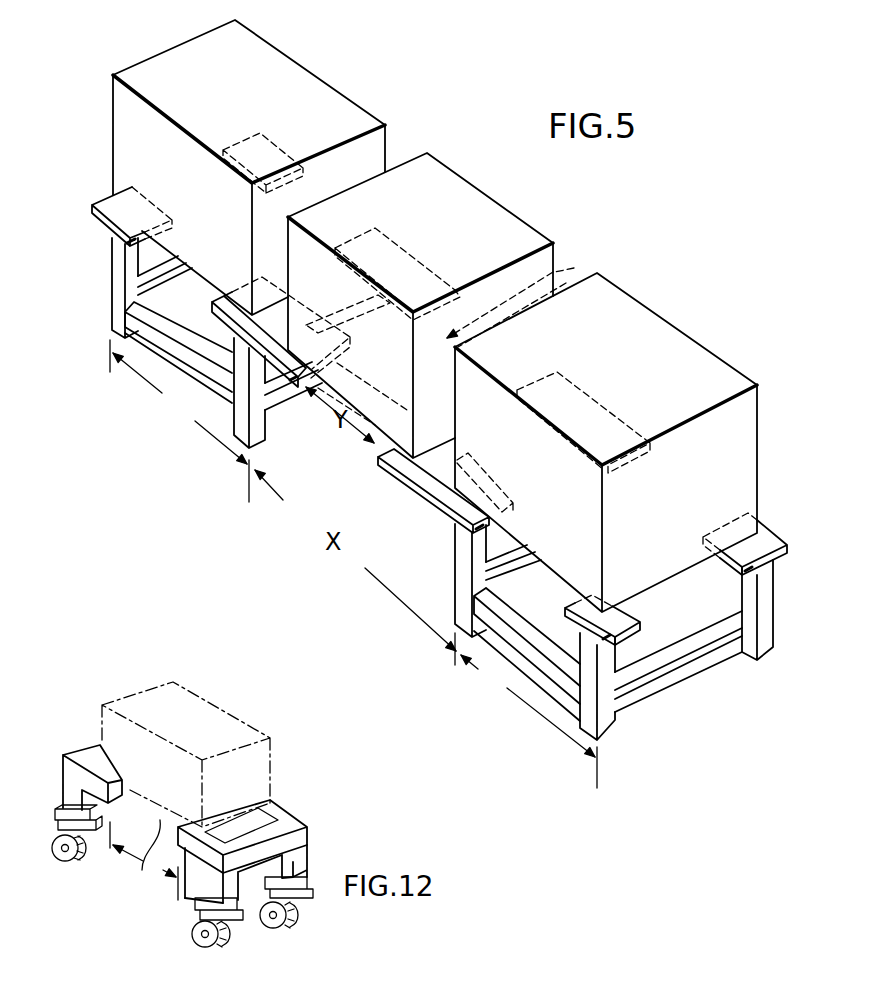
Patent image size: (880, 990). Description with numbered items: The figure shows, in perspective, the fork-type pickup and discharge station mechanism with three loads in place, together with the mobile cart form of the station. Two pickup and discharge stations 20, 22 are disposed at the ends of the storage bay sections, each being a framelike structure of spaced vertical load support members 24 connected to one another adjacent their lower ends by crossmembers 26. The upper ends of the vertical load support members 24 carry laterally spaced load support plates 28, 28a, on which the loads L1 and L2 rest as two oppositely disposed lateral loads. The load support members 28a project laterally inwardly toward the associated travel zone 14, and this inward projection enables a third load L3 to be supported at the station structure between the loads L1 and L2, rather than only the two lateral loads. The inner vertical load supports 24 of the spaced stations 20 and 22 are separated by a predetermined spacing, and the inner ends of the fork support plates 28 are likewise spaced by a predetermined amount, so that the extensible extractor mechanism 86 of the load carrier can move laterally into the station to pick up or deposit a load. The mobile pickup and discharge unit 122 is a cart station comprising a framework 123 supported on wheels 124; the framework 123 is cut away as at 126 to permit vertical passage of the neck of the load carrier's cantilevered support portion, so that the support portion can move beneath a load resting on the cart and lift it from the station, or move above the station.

In FIG. 5, the travel zone 14 is at (286, 547).
In FIG. 5, the pickup and discharge station 20 is at (105, 281).
In FIG. 5, the pickup and discharge station 22 is at (650, 697).
In FIG. 5, the vertical load support member 24 is at (442, 431).
In FIG. 5, the crossmember 26 is at (442, 431).
In FIG. 5, the load support plate 28 is at (442, 431).
In FIG. 5, the load support member 28a is at (442, 431).
In FIG. 5, the extractor mechanism 86 is at (657, 989).
In FIG. 5, the load L1 is at (318, 80).
In FIG. 5, the load L2 is at (640, 302).
In FIG. 5, the third load L3 is at (465, 179).
In FIG. 12, the mobile pickup and discharge unit 122 is at (303, 813).
In FIG. 12, the framework 123 is at (205, 853).
In FIG. 12, the wheels 124 is at (77, 861).
In FIG. 12, the cut away 126 is at (143, 861).